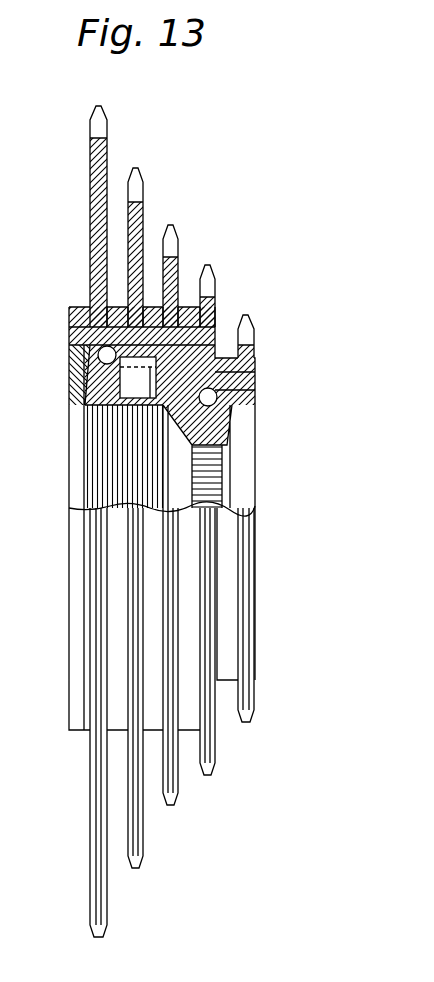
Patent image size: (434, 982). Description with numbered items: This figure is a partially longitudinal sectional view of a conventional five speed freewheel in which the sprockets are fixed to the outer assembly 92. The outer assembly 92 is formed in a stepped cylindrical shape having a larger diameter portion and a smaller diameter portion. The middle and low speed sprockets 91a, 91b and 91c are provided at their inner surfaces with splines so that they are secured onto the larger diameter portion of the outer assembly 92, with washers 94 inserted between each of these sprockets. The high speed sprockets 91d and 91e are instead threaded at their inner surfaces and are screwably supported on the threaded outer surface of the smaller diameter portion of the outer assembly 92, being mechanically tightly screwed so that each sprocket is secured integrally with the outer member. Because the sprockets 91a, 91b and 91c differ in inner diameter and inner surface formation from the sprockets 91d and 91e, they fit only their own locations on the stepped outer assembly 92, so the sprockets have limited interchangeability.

The low speed sprocket 91a is at (103, 155).
The middle speed sprocket 91b is at (138, 217).
The middle speed sprocket 91c is at (178, 265).
The high speed sprocket 91d is at (213, 303).
The high speed sprocket 91e is at (252, 353).
The outer assembly 92 is at (215, 313).
The washers 94 is at (150, 308).